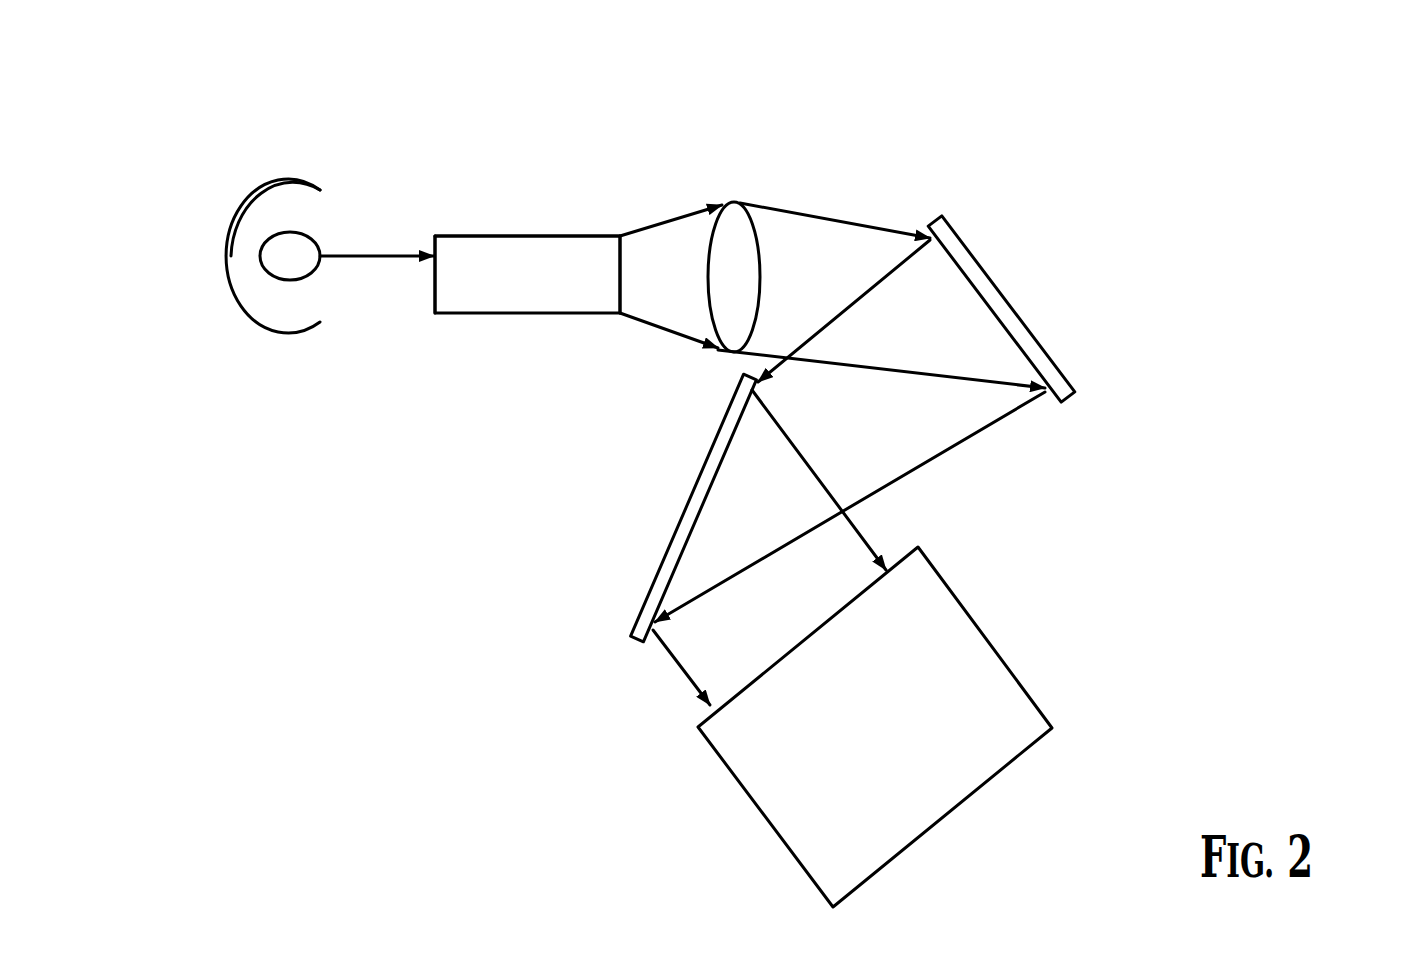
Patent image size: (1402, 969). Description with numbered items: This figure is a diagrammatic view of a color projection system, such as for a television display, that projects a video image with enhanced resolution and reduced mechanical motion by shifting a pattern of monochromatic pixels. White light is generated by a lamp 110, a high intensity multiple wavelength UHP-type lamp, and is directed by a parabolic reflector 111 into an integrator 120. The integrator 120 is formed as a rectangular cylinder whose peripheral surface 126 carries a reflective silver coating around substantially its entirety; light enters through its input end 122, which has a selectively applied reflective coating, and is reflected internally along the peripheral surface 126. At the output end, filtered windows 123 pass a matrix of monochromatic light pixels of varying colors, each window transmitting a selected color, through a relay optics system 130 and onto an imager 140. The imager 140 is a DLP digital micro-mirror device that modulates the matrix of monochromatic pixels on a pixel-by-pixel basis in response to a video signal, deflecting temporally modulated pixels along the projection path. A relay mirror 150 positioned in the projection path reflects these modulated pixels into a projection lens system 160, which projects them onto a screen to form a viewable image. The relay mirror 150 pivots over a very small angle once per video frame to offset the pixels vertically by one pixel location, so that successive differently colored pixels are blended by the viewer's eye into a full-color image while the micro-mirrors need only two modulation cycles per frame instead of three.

The lamp 110 is at (245, 348).
The parabolic reflector 111 is at (258, 175).
The integrator 120 is at (555, 236).
The input end 122 is at (432, 278).
The windows 123 is at (622, 277).
The peripheral surface 126 is at (489, 233).
The relay optics system 130 is at (705, 273).
The imager 140 is at (968, 230).
The relay mirror 150 is at (655, 575).
The projection lens system 160 is at (990, 632).